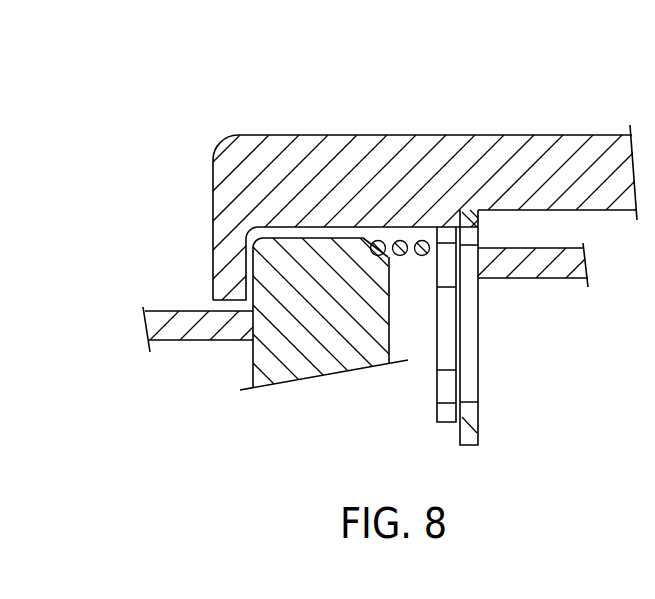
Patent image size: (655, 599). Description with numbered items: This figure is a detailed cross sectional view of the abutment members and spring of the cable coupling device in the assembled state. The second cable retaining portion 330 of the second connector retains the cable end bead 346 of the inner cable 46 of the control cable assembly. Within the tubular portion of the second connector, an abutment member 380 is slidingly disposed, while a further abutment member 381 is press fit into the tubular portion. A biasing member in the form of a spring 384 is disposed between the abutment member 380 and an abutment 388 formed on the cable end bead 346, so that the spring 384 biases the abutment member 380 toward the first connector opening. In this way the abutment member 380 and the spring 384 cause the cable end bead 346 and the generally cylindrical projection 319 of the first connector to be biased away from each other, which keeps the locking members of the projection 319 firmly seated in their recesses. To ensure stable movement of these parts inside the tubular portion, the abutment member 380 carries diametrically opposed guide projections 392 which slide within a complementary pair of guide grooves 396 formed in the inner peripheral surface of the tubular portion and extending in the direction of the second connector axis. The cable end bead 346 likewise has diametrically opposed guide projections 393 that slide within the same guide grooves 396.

The second cable retaining portion 330 is at (279, 110).
The guide grooves 396 is at (323, 235).
The cable end bead 346 is at (293, 373).
The guide projections 393 is at (277, 247).
The abutment 388 is at (387, 257).
The spring 384 is at (400, 240).
The guide projections 392 is at (443, 227).
The abutment member 380 is at (440, 397).
The abutment member 381 is at (463, 212).
The projection 319 is at (536, 268).
The inner cable 46 is at (188, 330).